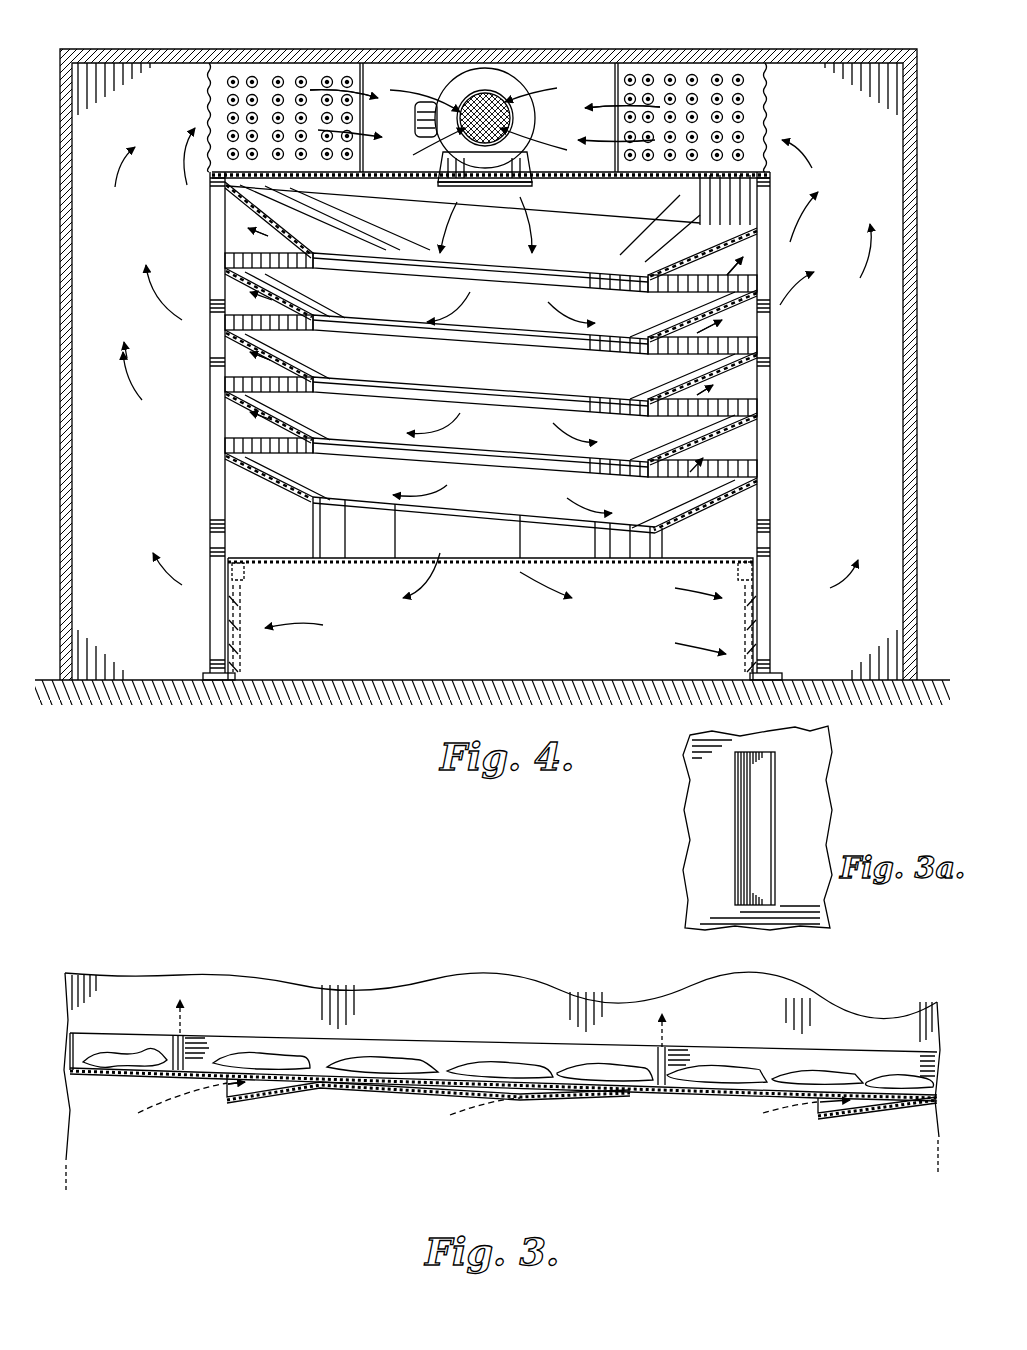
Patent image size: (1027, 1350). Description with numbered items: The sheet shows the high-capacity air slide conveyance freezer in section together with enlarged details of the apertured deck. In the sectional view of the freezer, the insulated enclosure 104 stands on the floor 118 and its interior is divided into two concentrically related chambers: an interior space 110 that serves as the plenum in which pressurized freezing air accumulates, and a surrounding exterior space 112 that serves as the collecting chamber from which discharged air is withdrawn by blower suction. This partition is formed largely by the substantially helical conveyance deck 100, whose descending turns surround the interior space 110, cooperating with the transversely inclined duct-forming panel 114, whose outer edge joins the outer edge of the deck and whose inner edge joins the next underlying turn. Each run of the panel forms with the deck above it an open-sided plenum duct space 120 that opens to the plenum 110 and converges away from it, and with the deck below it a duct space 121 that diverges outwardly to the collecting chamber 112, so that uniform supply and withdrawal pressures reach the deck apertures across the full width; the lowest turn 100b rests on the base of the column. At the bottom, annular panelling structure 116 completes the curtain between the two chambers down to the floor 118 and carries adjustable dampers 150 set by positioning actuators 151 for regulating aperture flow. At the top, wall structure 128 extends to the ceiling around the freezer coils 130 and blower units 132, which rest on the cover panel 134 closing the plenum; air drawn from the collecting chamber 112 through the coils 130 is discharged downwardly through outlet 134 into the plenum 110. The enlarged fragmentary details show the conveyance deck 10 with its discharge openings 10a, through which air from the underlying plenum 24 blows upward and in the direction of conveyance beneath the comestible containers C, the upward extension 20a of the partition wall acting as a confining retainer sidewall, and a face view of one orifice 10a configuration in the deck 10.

In FIG. 4, the enclosure 104 is at (822, 47).
In FIG. 4, the floor 118 is at (427, 678).
In FIG. 4, the duct space 121 is at (212, 352).
In FIG. 4, the freezer or evaporator coils 130 is at (280, 77).
In FIG. 4, the wall structure 128 is at (768, 118).
In FIG. 4, the blower units 132 is at (500, 77).
In FIG. 4, the cover panel / outlet 134 is at (497, 190).
In FIG. 4, the duct-forming panel 114 is at (295, 228).
In FIG. 4, the conveyance deck 100 is at (226, 245).
In FIG. 4, the bottom tray 100b is at (322, 382).
In FIG. 4, the plenum duct space 120 is at (640, 318).
In FIG. 4, the interior space 110 is at (500, 375).
In FIG. 4, the exterior space 112 is at (152, 477).
In FIG. 4, the annular panelling structure 116 is at (302, 562).
In FIG. 4, the positioning actuators 151 is at (258, 562).
In FIG. 4, the adjustable dampers 150 is at (230, 617).
In FIG. 3A, the conveyance deck 10 is at (802, 812).
In FIG. 3, the conveyance deck 10 is at (382, 1090).
In FIG. 3A, the discharge openings 10a is at (748, 843).
In FIG. 3, the discharge openings 10a is at (270, 1088).
In FIG. 3, the upward extension of partition wall 20a is at (368, 1003).
In FIG. 3, the plenum 24 is at (472, 1166).
In FIG. 3, the comestible containers C is at (262, 1042).